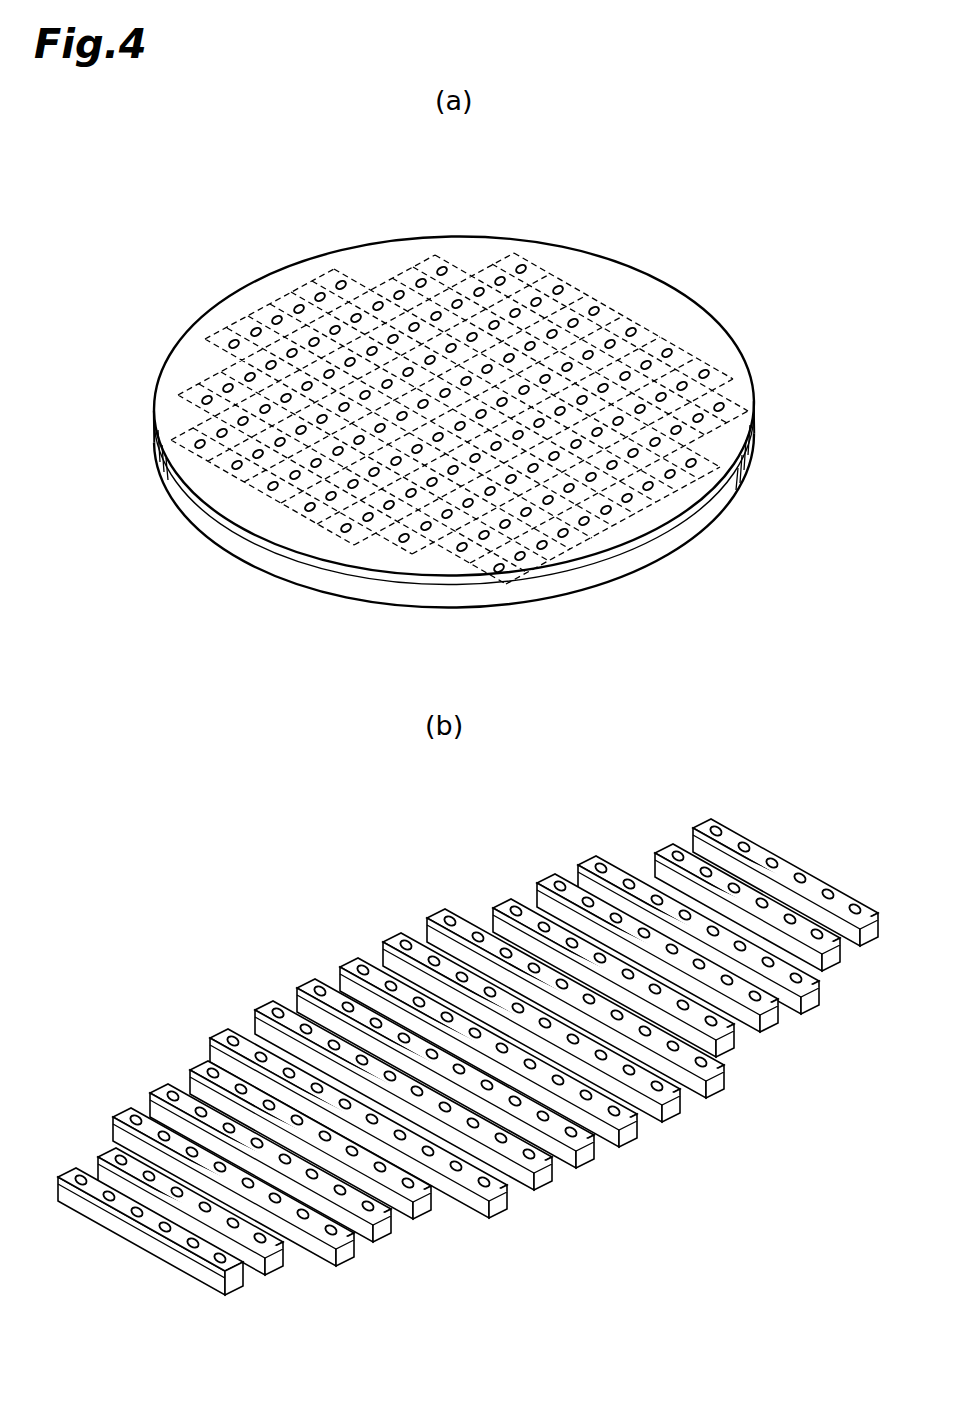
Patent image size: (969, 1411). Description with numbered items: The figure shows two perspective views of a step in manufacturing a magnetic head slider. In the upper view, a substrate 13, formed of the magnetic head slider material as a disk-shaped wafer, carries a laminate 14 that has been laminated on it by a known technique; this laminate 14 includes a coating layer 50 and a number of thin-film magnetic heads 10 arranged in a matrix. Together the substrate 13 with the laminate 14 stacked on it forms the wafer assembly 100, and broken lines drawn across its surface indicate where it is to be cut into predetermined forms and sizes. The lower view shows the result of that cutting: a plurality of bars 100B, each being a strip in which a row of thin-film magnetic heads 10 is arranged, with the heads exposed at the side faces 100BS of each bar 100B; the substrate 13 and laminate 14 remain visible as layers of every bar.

The substrate having the laminate stacked thereon 100 is at (787, 237).
The coating layer 50 is at (657, 300).
The thin-film magnetic head 10 is at (597, 303).
The laminate 14 is at (749, 464).
The substrate 13 is at (718, 503).
The side face 100BS is at (75, 1200).
The bar 100B is at (241, 1293).